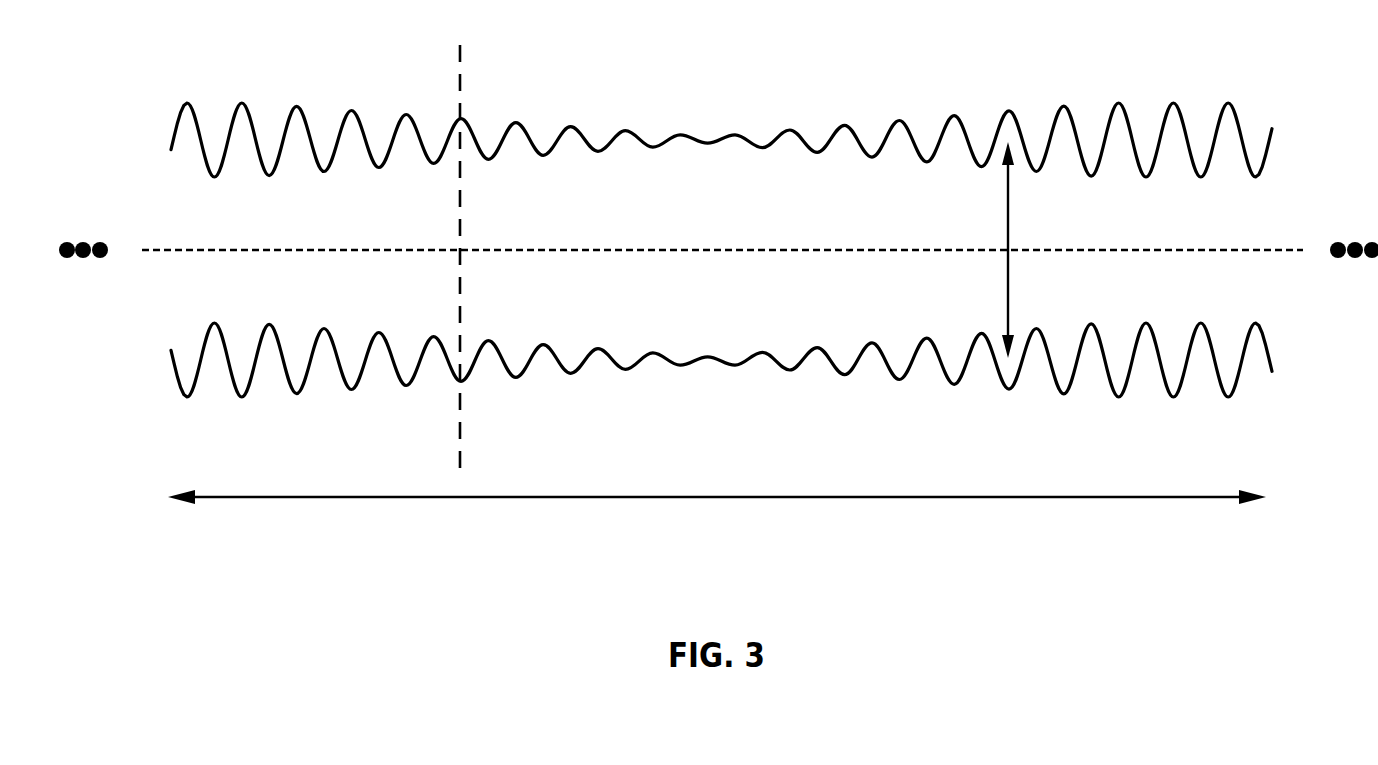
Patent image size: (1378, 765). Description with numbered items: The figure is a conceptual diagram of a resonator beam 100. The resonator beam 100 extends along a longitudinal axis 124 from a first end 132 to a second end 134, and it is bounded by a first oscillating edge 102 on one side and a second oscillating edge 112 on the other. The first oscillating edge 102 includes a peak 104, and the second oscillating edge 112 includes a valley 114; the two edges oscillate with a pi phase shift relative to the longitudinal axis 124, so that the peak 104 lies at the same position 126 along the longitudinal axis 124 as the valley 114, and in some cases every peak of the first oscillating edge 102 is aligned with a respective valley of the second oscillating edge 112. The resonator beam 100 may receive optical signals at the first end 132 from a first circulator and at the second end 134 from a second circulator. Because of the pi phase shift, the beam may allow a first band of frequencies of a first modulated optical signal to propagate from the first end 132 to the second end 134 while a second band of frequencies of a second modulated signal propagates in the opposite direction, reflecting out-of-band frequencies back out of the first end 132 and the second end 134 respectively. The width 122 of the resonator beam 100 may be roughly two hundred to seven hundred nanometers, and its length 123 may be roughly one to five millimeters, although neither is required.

The resonator beam 100 is at (1312, 214).
The first oscillating edge 102 is at (683, 138).
The peak 104 is at (461, 118).
The second oscillating edge 112 is at (703, 355).
The valley 114 is at (460, 383).
The width 122 is at (1010, 225).
The length 123 is at (688, 496).
The longitudinal axis 124 is at (543, 250).
The position 126 is at (460, 48).
The first end 132 is at (171, 115).
The second end 134 is at (1272, 128).